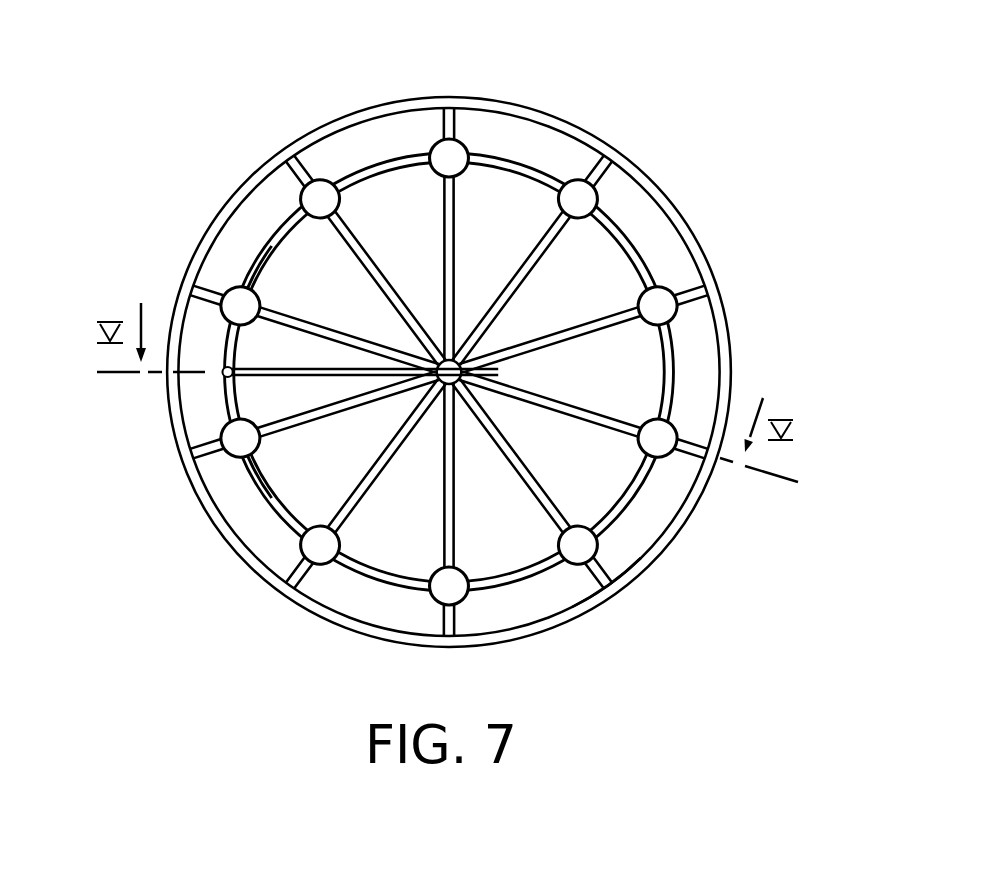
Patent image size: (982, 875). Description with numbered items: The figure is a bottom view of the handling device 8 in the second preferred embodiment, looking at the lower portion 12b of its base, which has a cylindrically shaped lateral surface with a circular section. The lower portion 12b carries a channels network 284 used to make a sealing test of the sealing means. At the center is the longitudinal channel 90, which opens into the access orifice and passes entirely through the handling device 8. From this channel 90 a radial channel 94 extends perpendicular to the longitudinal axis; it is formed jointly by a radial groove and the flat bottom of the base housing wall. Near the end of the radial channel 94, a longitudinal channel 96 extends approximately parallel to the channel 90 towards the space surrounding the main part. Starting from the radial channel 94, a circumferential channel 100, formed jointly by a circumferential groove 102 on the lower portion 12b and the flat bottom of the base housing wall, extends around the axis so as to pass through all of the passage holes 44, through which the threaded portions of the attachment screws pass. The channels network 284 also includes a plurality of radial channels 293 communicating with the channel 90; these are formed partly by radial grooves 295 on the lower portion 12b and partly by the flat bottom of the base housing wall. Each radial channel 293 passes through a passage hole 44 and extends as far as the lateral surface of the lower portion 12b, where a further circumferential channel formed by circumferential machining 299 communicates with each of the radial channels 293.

The handling device 8 is at (466, 357).
The lower portion of the base 12b is at (708, 362).
The passage hole 44 is at (330, 180).
The longitudinal channel 90 is at (443, 360).
The radial channel 94 is at (288, 373).
The longitudinal channel 96 is at (228, 375).
The circumferential channel 100 is at (287, 227).
The circumferential groove 102 is at (262, 250).
The channels network 284 is at (252, 502).
The radial channels 293 is at (693, 293).
The radial grooves 295 is at (445, 538).
The circumferential machining 299 is at (690, 513).